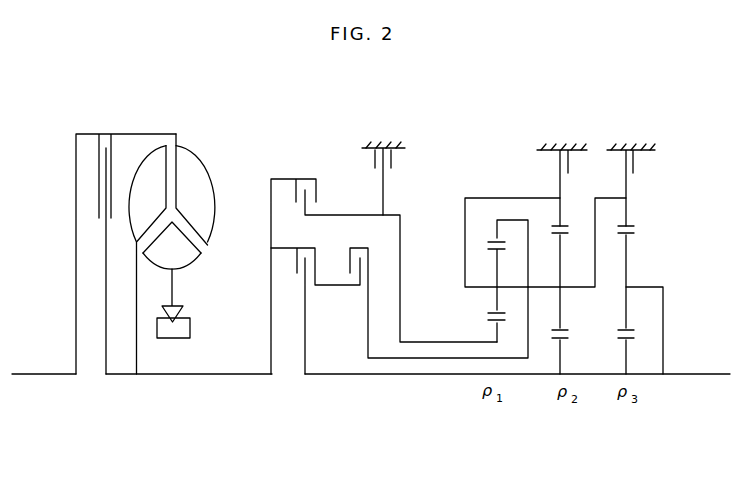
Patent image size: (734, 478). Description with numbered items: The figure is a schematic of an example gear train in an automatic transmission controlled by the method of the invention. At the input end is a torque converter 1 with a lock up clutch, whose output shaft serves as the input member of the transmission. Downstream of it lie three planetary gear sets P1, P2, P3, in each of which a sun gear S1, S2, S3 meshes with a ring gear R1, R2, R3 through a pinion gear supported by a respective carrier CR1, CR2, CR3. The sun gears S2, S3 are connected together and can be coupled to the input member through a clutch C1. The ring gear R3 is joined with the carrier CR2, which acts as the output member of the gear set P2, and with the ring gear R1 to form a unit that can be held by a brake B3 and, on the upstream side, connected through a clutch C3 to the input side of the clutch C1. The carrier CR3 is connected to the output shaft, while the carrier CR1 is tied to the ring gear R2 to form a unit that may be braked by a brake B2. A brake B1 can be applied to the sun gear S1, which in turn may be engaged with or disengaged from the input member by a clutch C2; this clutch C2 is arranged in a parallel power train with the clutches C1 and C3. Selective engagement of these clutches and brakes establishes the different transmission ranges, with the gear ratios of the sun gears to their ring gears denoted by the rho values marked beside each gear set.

The torque converter 1 is at (207, 174).
The clutch C1 is at (315, 301).
The clutch C2 is at (384, 266).
The clutch C3 is at (438, 289).
The brake B1 is at (383, 169).
The brake B2 is at (562, 175).
The brake B3 is at (631, 175).
The ring gear R1 is at (497, 232).
The ring gear R2 is at (560, 212).
The ring gear R3 is at (626, 212).
The carrier CR1 is at (497, 287).
The carrier CR2 is at (560, 287).
The carrier CR3 is at (627, 286).
The sun gear S1 is at (497, 333).
The sun gear S2 is at (560, 355).
The sun gear S3 is at (626, 357).
The planetary gear set P1 is at (491, 324).
The planetary gear set P2 is at (577, 319).
The planetary gear set P3 is at (641, 319).